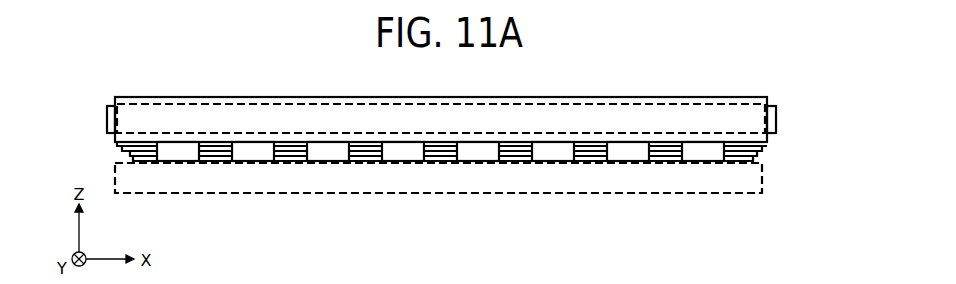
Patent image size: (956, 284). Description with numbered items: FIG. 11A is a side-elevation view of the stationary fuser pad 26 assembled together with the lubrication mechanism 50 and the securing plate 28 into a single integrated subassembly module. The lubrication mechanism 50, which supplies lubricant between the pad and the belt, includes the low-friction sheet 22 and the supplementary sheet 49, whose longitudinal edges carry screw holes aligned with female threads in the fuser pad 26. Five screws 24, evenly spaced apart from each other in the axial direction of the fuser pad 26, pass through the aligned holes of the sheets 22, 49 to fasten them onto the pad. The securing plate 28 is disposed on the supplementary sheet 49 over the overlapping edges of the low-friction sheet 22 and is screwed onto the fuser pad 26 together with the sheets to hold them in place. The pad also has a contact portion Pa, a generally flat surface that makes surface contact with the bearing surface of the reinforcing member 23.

The low-friction sheet 22 is at (767, 97).
The stationary fuser pad 26 is at (587, 100).
The supplementary sheet 49 is at (765, 144).
The lubrication mechanism 50 is at (810, 83).
The screw 24 is at (141, 160).
The contact portion Pa is at (485, 158).
The securing plate 28 is at (670, 158).
The reinforcing member 23 is at (360, 195).